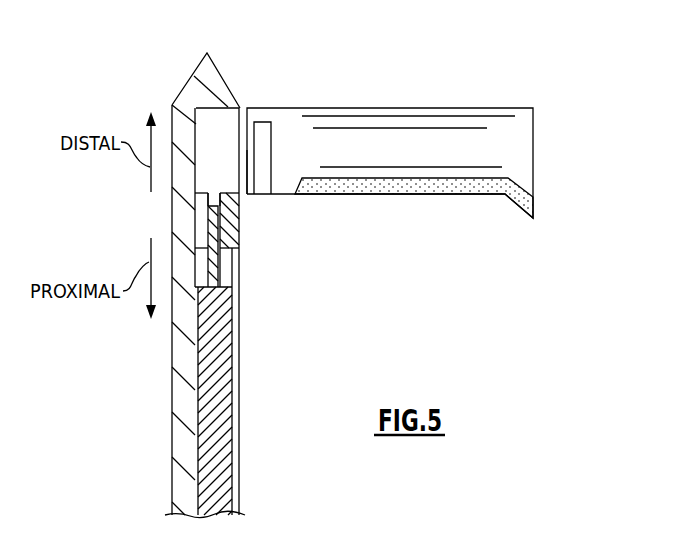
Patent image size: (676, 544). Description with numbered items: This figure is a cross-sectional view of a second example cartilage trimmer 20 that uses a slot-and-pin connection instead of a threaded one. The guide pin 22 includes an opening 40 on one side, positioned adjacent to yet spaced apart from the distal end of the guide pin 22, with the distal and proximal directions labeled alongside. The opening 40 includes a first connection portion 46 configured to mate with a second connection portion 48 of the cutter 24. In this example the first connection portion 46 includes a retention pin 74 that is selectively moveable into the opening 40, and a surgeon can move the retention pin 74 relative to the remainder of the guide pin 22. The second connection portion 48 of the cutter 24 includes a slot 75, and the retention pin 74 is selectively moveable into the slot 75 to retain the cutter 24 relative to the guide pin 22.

The cartilage trimmer 20 is at (277, 311).
The guide pin 22 is at (240, 265).
The cutter 24 is at (374, 98).
The opening 40 is at (244, 100).
The first connection portion 46 is at (221, 183).
The second connection portion 48 is at (254, 204).
The retention pin 74 is at (213, 228).
The slot 75 is at (264, 183).